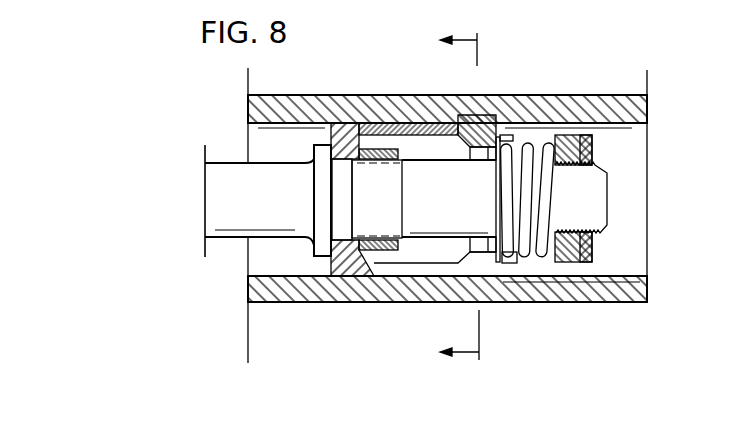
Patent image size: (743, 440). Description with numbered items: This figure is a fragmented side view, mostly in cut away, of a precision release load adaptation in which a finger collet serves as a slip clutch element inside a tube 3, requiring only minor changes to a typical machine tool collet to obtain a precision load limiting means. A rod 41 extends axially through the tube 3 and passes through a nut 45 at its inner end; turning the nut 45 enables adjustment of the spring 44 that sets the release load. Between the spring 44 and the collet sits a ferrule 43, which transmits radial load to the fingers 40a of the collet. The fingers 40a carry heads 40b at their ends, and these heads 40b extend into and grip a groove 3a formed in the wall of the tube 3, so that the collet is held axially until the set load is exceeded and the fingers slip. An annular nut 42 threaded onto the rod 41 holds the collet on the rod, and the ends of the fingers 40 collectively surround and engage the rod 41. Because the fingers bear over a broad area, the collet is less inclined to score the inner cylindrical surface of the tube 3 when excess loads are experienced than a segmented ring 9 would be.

The tube 3 is at (577, 93).
The groove 3a is at (500, 115).
The segmented ring 9 is at (448, 194).
The fingers 40 is at (339, 130).
The fingers 40a is at (397, 272).
The heads 40b is at (466, 160).
The rod 41 is at (292, 232).
The annular nut 42 is at (373, 251).
The ferrule 43 is at (505, 263).
The spring 44 is at (542, 257).
The nut 45 is at (590, 258).